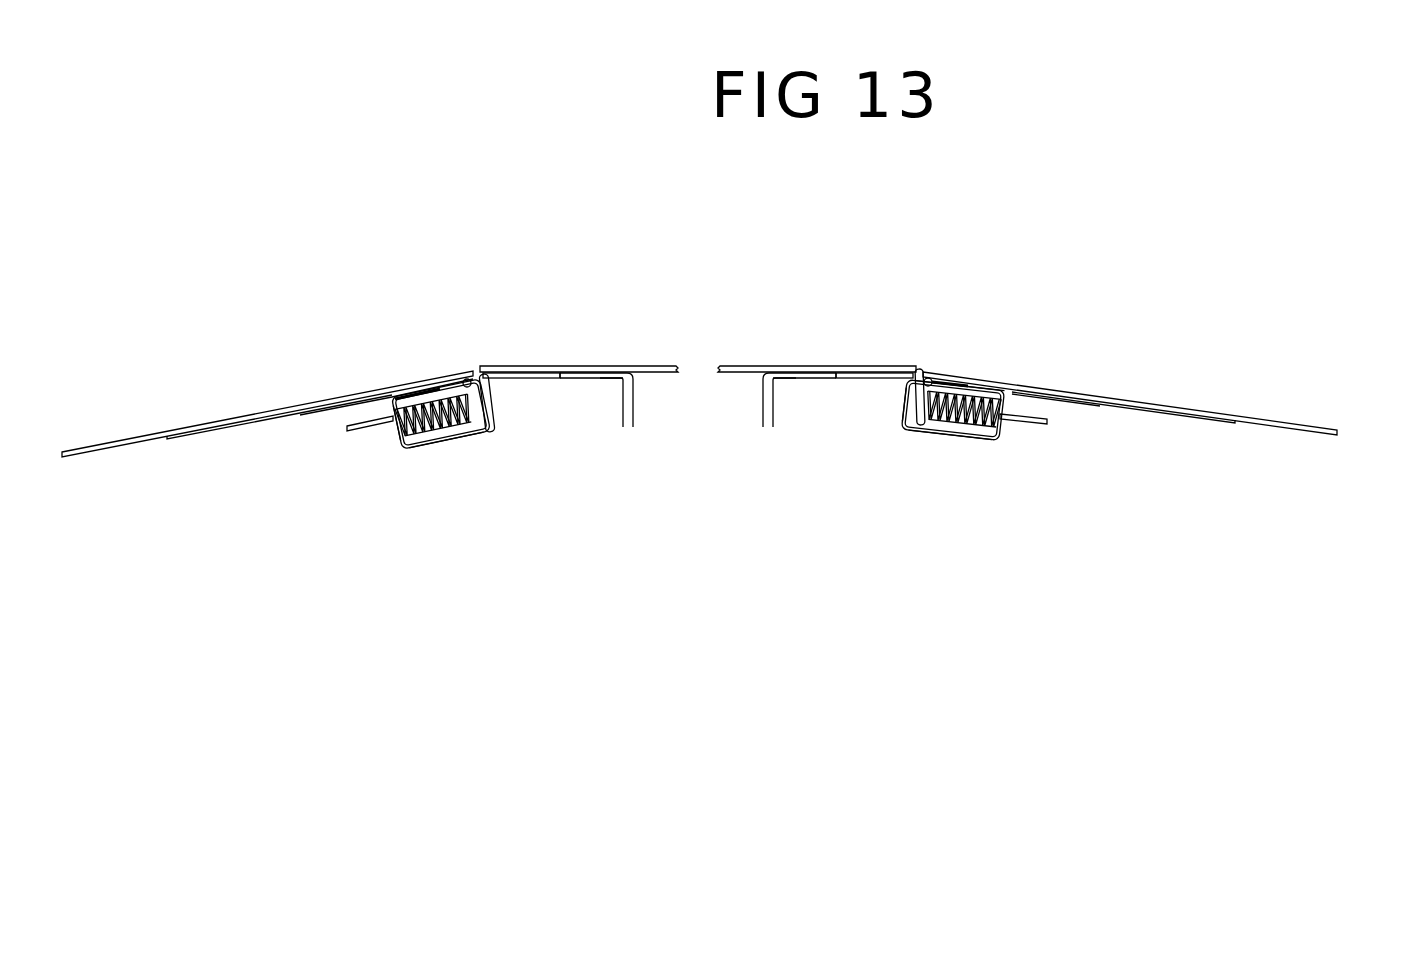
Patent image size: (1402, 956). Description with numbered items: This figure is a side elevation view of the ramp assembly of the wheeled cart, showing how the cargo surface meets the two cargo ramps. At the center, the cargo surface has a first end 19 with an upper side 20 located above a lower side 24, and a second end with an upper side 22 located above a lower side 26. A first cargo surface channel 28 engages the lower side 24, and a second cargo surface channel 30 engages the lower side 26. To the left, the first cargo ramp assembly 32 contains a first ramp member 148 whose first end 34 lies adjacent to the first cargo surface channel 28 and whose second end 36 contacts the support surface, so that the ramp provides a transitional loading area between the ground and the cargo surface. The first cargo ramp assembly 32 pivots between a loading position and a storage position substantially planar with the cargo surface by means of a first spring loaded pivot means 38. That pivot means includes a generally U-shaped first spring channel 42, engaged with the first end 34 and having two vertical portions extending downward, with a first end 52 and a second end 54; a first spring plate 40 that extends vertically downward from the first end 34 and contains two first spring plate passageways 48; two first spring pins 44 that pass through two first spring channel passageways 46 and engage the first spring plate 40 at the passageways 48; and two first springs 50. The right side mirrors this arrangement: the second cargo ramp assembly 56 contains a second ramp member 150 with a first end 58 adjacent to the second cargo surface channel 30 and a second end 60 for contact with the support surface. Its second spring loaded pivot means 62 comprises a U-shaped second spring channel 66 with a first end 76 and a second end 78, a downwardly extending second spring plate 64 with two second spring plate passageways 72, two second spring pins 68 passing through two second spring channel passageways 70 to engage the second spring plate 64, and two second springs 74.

The first end of the cargo surface 19 is at (698, 408).
The upper side of the first end of the cargo surface 20 is at (596, 413).
The upper side of the second end of the cargo surface 22 is at (817, 397).
The lower side of the first end of the cargo surface 24 is at (640, 378).
The lower side of the second end of the cargo surface 26 is at (735, 375).
The first cargo surface channel 28 is at (645, 452).
The second cargo surface channel 30 is at (780, 420).
The first cargo ramp assembly 32 is at (320, 336).
The first end of the first ramp member 34 is at (412, 383).
The second end of the first ramp member 36 is at (77, 446).
The first spring loaded pivot means 38 is at (462, 608).
The first spring plate 40 is at (463, 440).
The first spring channel 42 is at (433, 450).
The first spring pins 44 is at (353, 430).
The first spring channel passageways 46 is at (410, 435).
The first spring plate passageways 48 is at (488, 438).
The first springs 50 is at (447, 447).
The first end of the first spring channel 52 is at (345, 412).
The second end of the first spring channel 54 is at (492, 402).
The second cargo ramp assembly 56 is at (1052, 328).
The first end of the second ramp member 58 is at (930, 360).
The second end of the second ramp member 60 is at (1303, 430).
The second spring loaded pivot means 62 is at (937, 592).
The second spring plate 64 is at (918, 368).
The second spring channel 66 is at (947, 440).
The second spring pins 68 is at (1050, 422).
The second spring channel passageways 70 is at (1000, 443).
The second spring plate passageways 72 is at (918, 386).
The second springs 74 is at (968, 425).
The first end of the second spring channel 76 is at (1048, 400).
The second end of the second spring channel 78 is at (900, 432).
The first ramp member 148 is at (221, 419).
The second ramp member 150 is at (1178, 412).